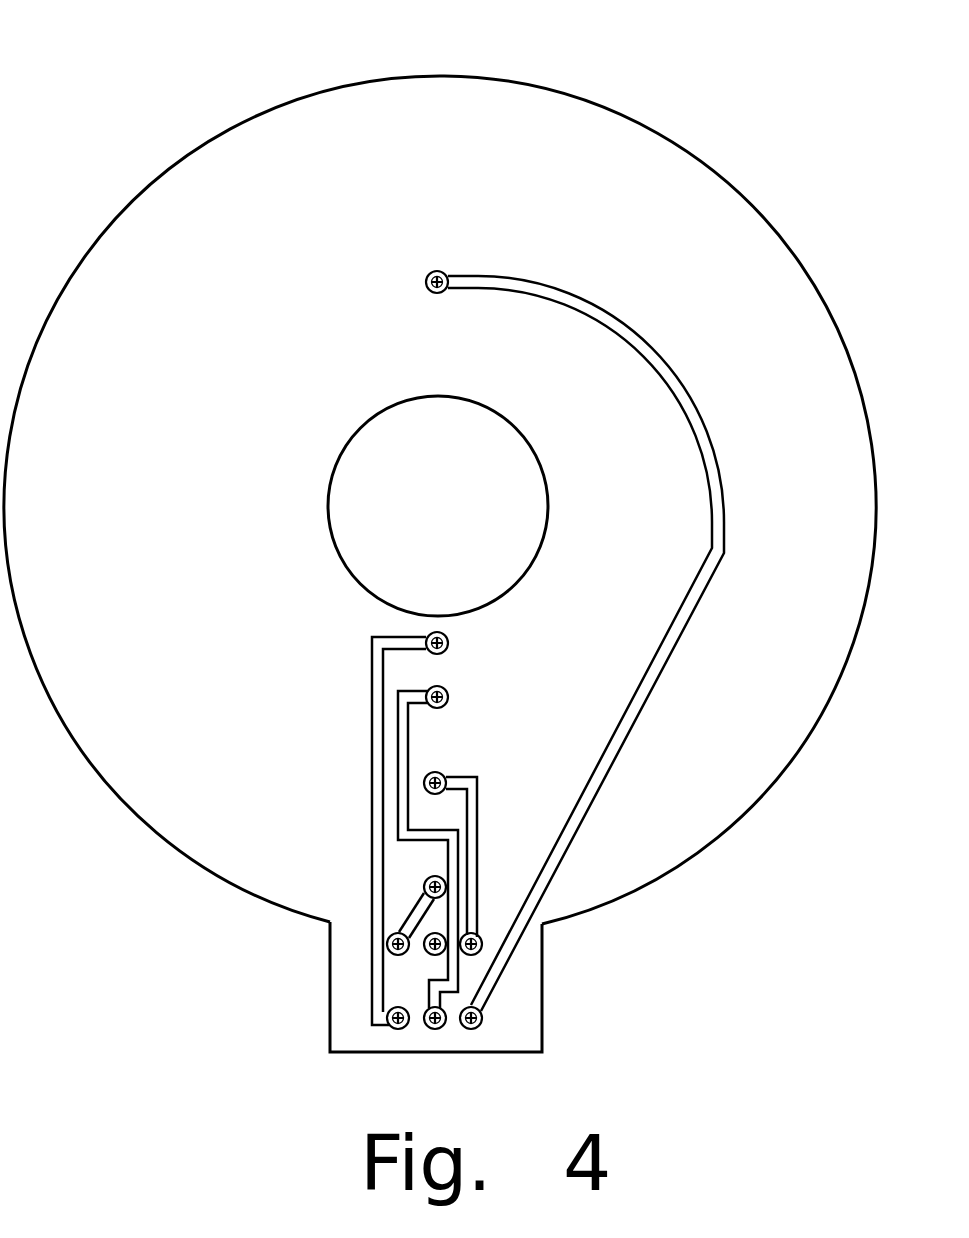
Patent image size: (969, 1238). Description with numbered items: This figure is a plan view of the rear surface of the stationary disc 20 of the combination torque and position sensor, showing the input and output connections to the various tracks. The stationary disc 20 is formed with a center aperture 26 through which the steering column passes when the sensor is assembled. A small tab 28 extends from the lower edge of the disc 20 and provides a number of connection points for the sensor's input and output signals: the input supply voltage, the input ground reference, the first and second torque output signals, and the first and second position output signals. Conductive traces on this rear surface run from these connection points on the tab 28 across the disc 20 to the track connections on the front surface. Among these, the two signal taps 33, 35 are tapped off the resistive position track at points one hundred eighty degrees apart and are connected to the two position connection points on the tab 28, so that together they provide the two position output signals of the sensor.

The stationary disc 20 is at (145, 187).
The center aperture 26 is at (328, 472).
The tab 28 is at (365, 1003).
The signal tap 33 is at (441, 271).
The signal tap 35 is at (443, 687).